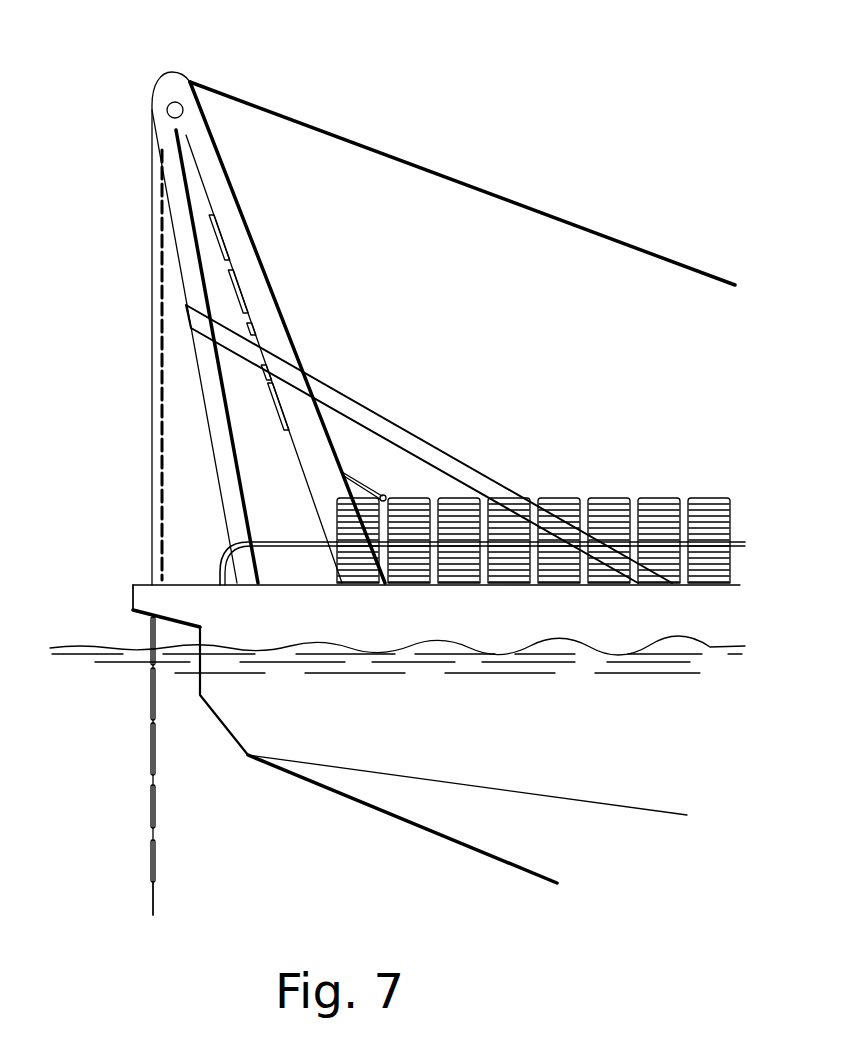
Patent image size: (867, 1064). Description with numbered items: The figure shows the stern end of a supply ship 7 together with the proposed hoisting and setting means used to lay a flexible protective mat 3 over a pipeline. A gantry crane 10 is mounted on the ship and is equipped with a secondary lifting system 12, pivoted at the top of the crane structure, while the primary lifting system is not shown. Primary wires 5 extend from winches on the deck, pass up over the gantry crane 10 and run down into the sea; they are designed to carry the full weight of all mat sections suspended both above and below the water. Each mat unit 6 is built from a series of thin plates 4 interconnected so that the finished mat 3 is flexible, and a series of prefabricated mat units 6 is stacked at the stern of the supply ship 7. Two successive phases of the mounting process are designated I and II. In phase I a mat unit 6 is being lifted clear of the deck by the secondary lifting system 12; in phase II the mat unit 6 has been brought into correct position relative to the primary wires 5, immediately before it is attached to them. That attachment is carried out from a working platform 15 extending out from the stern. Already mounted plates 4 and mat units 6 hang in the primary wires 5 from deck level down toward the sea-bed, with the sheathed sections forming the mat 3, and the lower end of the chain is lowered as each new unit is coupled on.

The mat 3 is at (148, 850).
The plates 4 is at (150, 684).
The primary wires 5 is at (382, 152).
The mat units 6 is at (228, 249).
The supply ship 7 is at (298, 727).
The gantry crane 10 is at (203, 147).
The secondary lifting system 12 is at (170, 102).
The working platform 15 is at (133, 602).
The phase I is at (278, 402).
The phase II is at (162, 498).